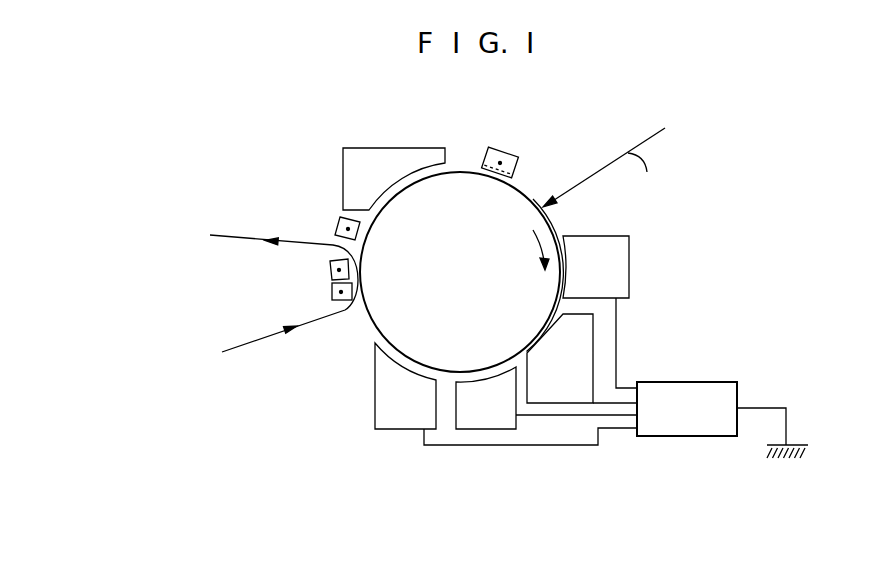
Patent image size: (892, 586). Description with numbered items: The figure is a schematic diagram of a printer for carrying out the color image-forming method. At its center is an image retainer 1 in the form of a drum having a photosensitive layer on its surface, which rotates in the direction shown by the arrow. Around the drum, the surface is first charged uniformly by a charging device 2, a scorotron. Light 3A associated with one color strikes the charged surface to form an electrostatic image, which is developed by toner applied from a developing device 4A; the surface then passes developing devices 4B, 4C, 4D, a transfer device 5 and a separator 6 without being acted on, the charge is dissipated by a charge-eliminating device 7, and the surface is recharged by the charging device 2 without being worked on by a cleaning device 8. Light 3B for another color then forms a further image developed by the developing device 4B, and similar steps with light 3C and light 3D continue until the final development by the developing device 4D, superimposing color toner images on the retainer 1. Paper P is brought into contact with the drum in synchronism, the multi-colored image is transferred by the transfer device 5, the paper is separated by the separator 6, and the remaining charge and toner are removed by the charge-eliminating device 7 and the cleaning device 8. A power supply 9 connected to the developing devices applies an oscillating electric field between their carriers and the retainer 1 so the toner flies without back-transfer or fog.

The image retainer 1 is at (527, 200).
The charging device 2 is at (505, 148).
The light 3A is at (616, 167).
The light 3B is at (616, 167).
The light 3C is at (616, 167).
The light 3D is at (616, 167).
The developing device 4A is at (629, 272).
The developing device 4B is at (593, 335).
The developing device 4C is at (490, 429).
The developing device 4D is at (398, 429).
The transfer device 5 is at (331, 293).
The separator 6 is at (329, 270).
The charge-eliminating device 7 is at (336, 223).
The cleaning device 8 is at (380, 148).
The power supply 9 is at (693, 436).
The paper P is at (232, 236).